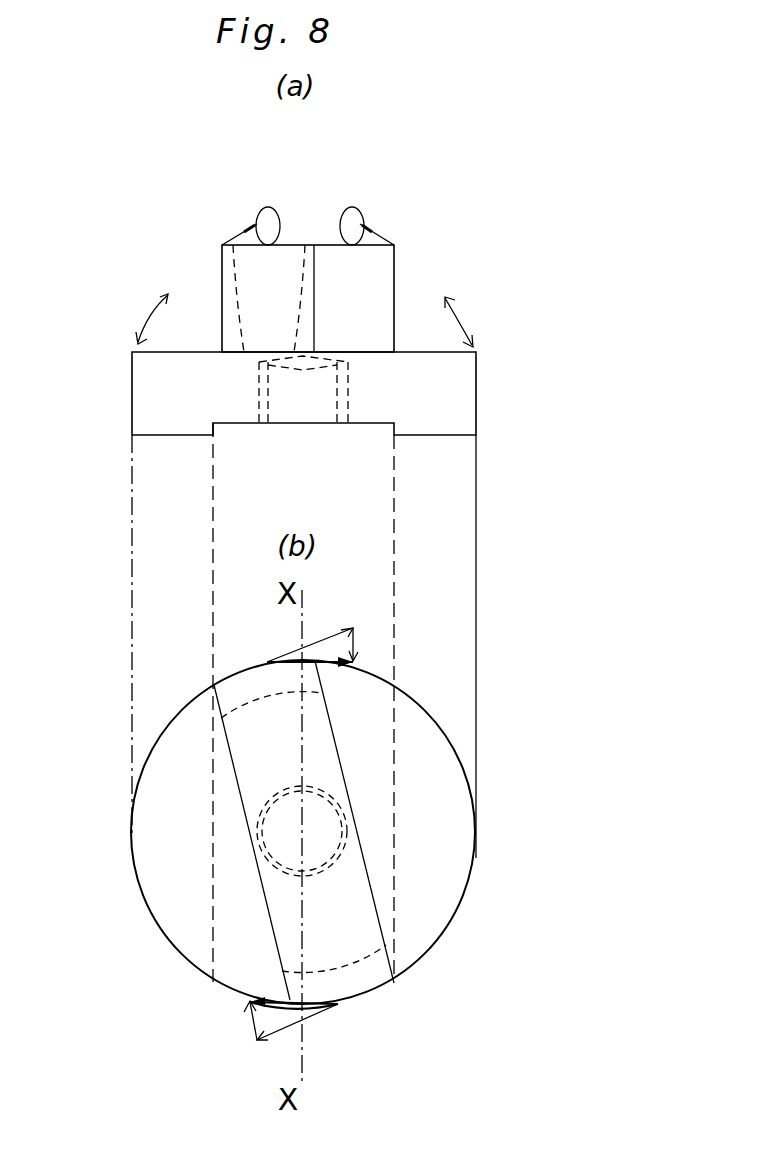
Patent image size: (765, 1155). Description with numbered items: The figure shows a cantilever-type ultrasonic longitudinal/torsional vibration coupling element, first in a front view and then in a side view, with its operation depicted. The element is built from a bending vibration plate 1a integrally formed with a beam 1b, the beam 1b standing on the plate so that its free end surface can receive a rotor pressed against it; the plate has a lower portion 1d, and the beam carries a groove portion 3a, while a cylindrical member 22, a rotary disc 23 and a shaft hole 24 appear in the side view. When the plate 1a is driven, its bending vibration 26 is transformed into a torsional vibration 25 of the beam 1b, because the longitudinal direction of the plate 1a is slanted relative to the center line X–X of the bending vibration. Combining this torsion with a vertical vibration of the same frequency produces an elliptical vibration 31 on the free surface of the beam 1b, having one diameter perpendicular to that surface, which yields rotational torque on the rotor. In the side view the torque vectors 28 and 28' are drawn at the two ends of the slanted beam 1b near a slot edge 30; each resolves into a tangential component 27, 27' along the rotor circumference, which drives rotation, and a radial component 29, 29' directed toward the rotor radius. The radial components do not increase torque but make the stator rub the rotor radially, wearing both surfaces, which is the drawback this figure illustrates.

The bending vibration plate 1a is at (458, 388).
The beam 1b is at (370, 275).
The lower portion of base 1d is at (438, 435).
The groove portion 3a is at (233, 268).
The cylindrical member 22 is at (372, 425).
The rotary disc 23 is at (433, 762).
The shaft hole 24 is at (262, 423).
The torsional vibration 25 is at (460, 315).
The bending vibration 26 is at (385, 237).
The tangential vector component 27 is at (336, 1041).
The tangential vector component 27' is at (324, 612).
The rotational torque vector 28 is at (214, 998).
The rotational torque vector 28' is at (370, 642).
The radial vector component 29 is at (197, 1040).
The radial vector component 29' is at (443, 582).
The slot edge 30 is at (251, 696).
The elliptical vibration 31 is at (263, 207).